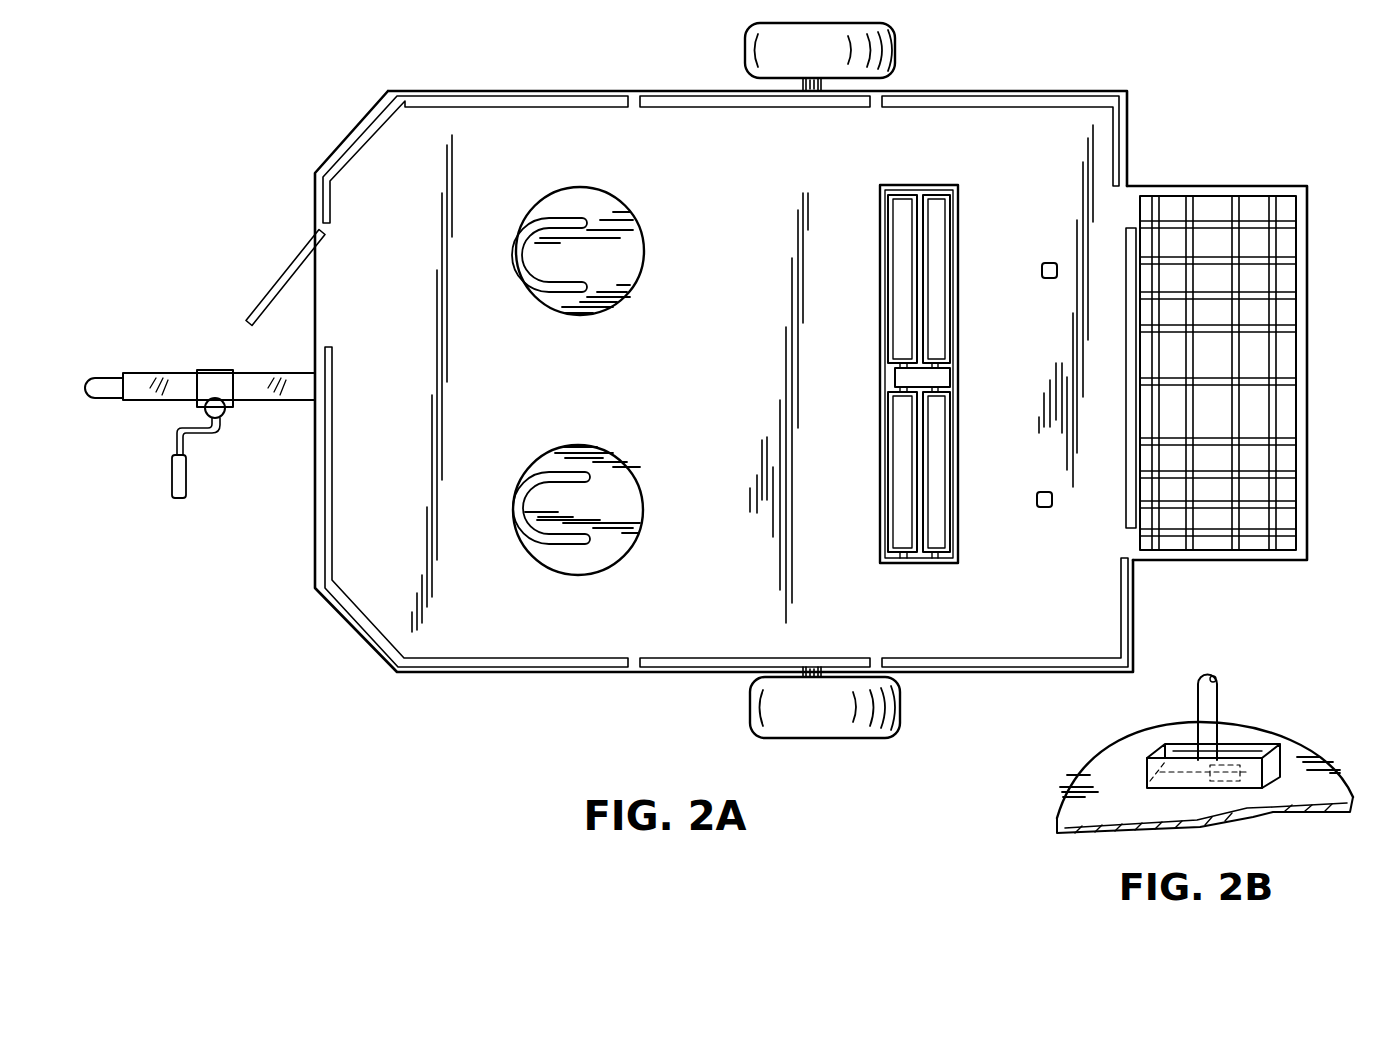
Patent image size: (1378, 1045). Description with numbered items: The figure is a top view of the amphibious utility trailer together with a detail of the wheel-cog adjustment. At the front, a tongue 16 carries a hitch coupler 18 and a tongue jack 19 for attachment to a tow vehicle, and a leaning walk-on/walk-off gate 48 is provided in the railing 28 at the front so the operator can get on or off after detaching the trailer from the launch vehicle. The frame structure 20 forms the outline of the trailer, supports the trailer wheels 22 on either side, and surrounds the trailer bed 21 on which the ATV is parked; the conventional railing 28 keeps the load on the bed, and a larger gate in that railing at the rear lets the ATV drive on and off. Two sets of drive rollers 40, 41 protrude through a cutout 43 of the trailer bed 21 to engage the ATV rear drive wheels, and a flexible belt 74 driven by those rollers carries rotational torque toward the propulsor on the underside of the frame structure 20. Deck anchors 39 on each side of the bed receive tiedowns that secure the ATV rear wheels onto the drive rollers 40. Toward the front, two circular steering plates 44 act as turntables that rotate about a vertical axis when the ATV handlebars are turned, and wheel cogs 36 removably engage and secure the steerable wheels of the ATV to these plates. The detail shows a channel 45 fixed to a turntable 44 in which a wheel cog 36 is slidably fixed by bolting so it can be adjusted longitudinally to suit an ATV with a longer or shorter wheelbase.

In FIG. 2A, the tongue 16 is at (178, 372).
In FIG. 2A, the hitch coupler 18 is at (96, 378).
In FIG. 2A, the tongue jack 19 is at (228, 416).
In FIG. 2A, the frame structure 20 is at (468, 90).
In FIG. 2A, the trailer bed 21 is at (741, 198).
In FIG. 2A, the trailer wheels 22 is at (748, 60).
In FIG. 2A, the railing 28 is at (1115, 142).
In FIG. 2A, the wheel cogs 36 is at (515, 245).
In FIG. 2B, the wheel cogs 36 is at (1200, 712).
In FIG. 2A, the deck anchors 39 is at (1044, 262).
In FIG. 2A, the drive rollers 40 is at (940, 270).
In FIG. 2A, the drive rollers 41 is at (898, 316).
In FIG. 2A, the cutout 43 is at (880, 262).
In FIG. 2A, the steering plates 44 is at (617, 205).
In FIG. 2B, the steering plates 44 is at (1113, 762).
In FIG. 2B, the channel 45 is at (1175, 745).
In FIG. 2A, the walk-on/walk-off gate 48 is at (1213, 190).
In FIG. 2A, the belt 74 is at (900, 378).